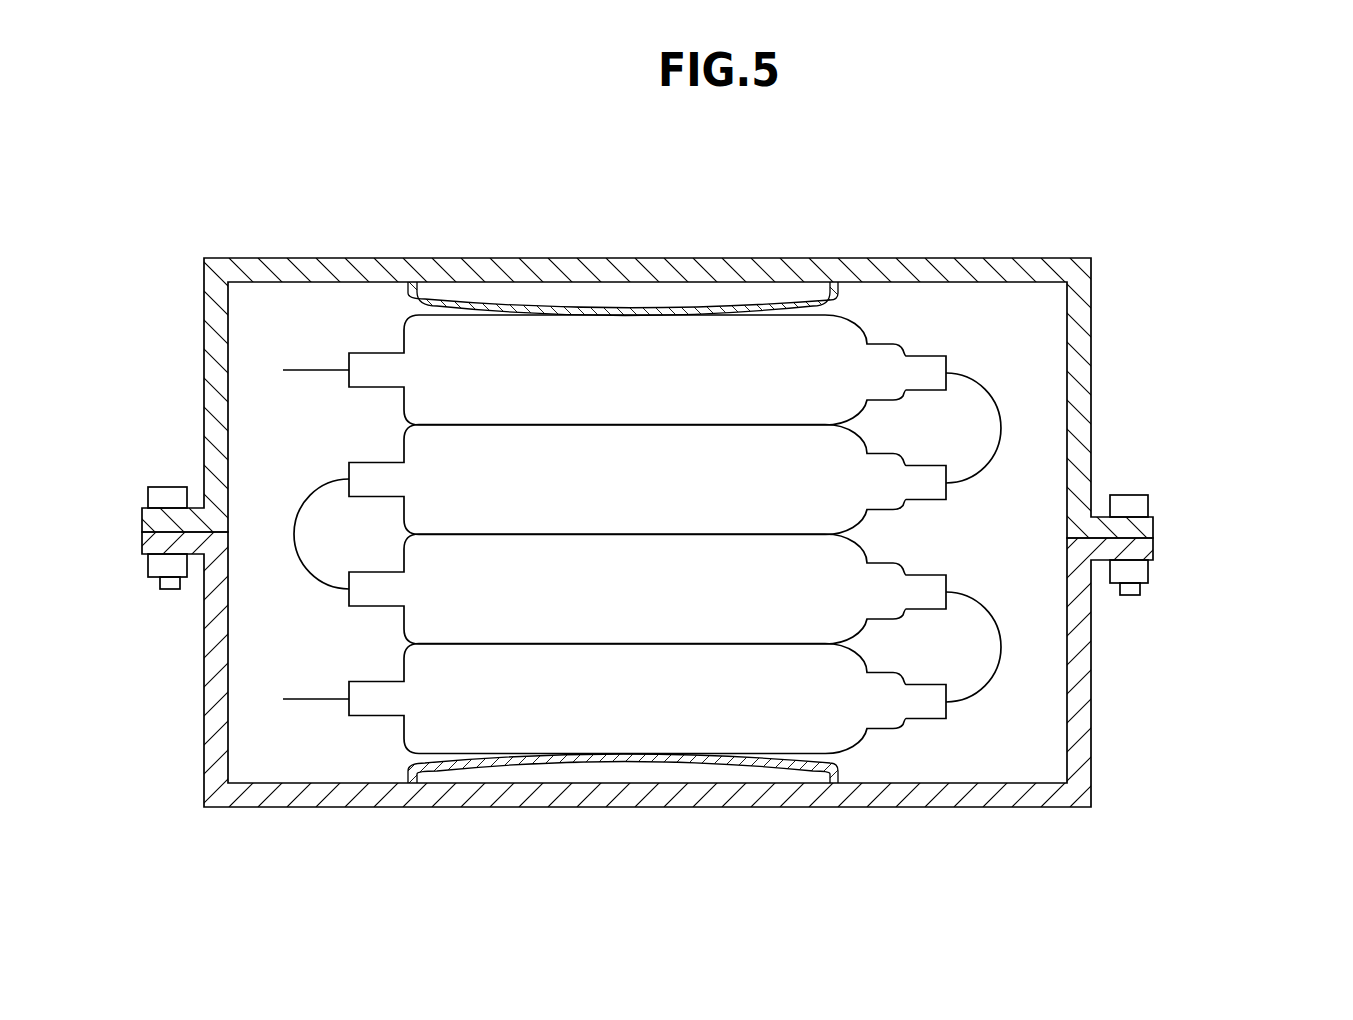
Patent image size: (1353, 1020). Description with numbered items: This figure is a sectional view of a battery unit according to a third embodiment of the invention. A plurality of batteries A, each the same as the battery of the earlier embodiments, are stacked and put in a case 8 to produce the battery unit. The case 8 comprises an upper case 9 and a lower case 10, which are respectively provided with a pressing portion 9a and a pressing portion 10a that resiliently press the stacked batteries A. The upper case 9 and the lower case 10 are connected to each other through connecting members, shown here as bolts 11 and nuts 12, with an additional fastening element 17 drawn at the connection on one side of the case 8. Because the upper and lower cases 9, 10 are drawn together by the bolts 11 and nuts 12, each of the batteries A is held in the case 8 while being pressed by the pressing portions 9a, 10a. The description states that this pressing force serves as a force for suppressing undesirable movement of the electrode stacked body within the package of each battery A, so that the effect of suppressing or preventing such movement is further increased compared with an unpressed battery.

The case 8 is at (676, 532).
The upper case 9 is at (1090, 395).
The pressing portion 9a is at (591, 312).
The lower case 10 is at (1090, 695).
The pressing portion 10a is at (583, 753).
The bolt 11 is at (165, 497).
The nut 12 is at (1135, 575).
The nut 17 is at (160, 568).
The battery A is at (837, 707).